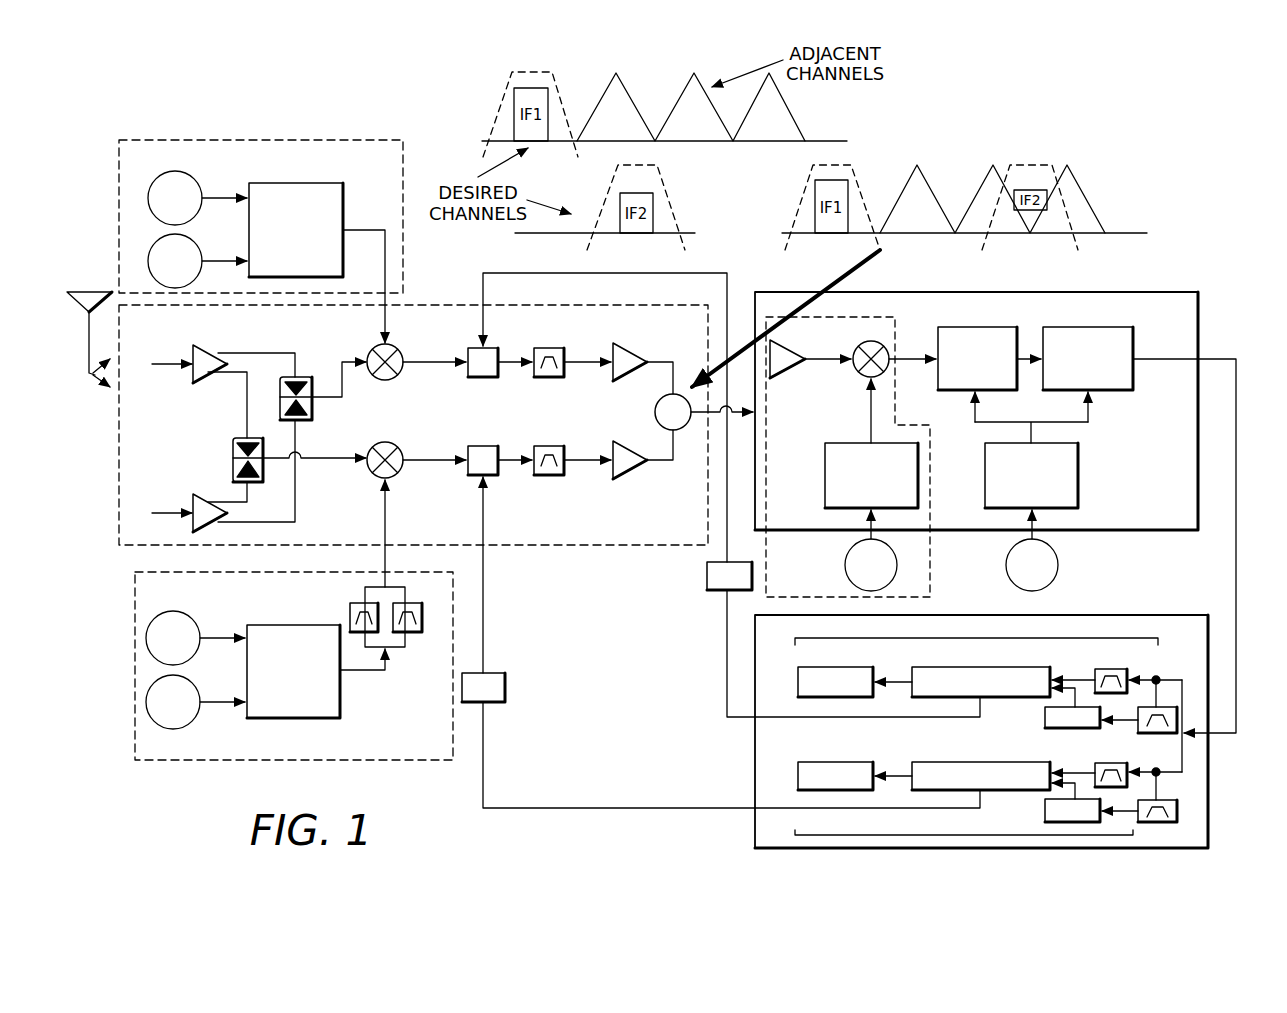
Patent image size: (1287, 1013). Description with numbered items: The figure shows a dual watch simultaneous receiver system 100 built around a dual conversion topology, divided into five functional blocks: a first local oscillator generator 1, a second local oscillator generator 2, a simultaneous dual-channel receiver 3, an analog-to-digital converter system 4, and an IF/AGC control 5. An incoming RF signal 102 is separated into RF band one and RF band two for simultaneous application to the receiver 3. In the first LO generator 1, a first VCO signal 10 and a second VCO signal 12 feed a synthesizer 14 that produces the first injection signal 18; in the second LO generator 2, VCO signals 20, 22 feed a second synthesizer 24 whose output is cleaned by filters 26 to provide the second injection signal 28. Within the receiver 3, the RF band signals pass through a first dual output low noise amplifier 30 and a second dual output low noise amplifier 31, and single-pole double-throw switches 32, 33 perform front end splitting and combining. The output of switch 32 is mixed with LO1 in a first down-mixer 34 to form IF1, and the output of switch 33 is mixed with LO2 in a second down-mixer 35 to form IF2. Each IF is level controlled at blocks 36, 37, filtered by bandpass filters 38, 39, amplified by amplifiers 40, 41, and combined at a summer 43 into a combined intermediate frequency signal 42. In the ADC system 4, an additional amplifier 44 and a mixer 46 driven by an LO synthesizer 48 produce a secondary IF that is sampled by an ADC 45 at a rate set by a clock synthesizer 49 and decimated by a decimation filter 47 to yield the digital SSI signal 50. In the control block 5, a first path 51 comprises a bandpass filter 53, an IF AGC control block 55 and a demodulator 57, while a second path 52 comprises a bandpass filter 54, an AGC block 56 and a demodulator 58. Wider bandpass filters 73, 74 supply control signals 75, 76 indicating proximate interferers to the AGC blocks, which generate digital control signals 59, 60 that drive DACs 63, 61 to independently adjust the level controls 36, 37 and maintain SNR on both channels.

The first local oscillator generator 1 is at (117, 221).
The second local oscillator generator 2 is at (135, 664).
The simultaneous dual-channel receiver 3 is at (117, 428).
The analog-to-digital converter system 4 is at (1185, 292).
The automatic gain control block 5 is at (1190, 615).
The first VCO signal 10 is at (196, 181).
The second VCO signal 12 is at (196, 244).
The synthesizer 14 is at (330, 183).
The first injection signal 18 is at (387, 273).
The first VCO signal 20 is at (194, 622).
The second VCO signal 22 is at (194, 684).
The second synthesizer 24 is at (292, 625).
The filters 26 is at (419, 603).
The second injection signal 28 is at (387, 556).
The first dual output low noise amplifier 30 is at (193, 374).
The second dual output low noise amplifier 31 is at (193, 527).
The single-pole double-throw switch 32 is at (312, 411).
The single-pole double-throw switch 33 is at (238, 440).
The first down-mixer 34 is at (398, 348).
The second down-mixer 35 is at (398, 446).
The level control 36 is at (490, 348).
The level control 37 is at (490, 446).
The first bandpass filter 38 is at (556, 348).
The second bandpass filter 39 is at (556, 446).
The first amplifier 40 is at (633, 350).
The second amplifier 41 is at (628, 447).
The combined intermediate frequency signal 42 is at (732, 420).
The summer 43 is at (654, 412).
The additional amplifier 44 is at (790, 347).
The ADC 45 is at (936, 380).
The mixer 46 is at (860, 373).
The decimation filter 47 is at (1128, 327).
The LO synthesizer 48 is at (825, 478).
The clock synthesizer 49 is at (1078, 480).
The digital signal 50 is at (1238, 572).
The first path 51 is at (797, 637).
The second path 52 is at (795, 832).
The bandpass filter block 53 is at (1112, 669).
The bandpass filter block 54 is at (1112, 763).
The IF AGC control block 55 is at (1036, 667).
The IF AGC control block 56 is at (928, 762).
The demodulator 57 is at (834, 667).
The demodulator 58 is at (834, 762).
The digital control signal 59 is at (727, 660).
The digital control signal 60 is at (652, 808).
The digital-to-analog converter 61 is at (507, 688).
The digital-to-analog converter 63 is at (707, 576).
The bandpass filter 73 is at (1162, 707).
The bandpass filter 74 is at (1165, 800).
The digital control signal 75 is at (1058, 728).
The digital control signal 76 is at (1045, 820).
The dual watch simultaneous receiver system 100 is at (675, 494).
The incoming RF signal 102 is at (88, 292).